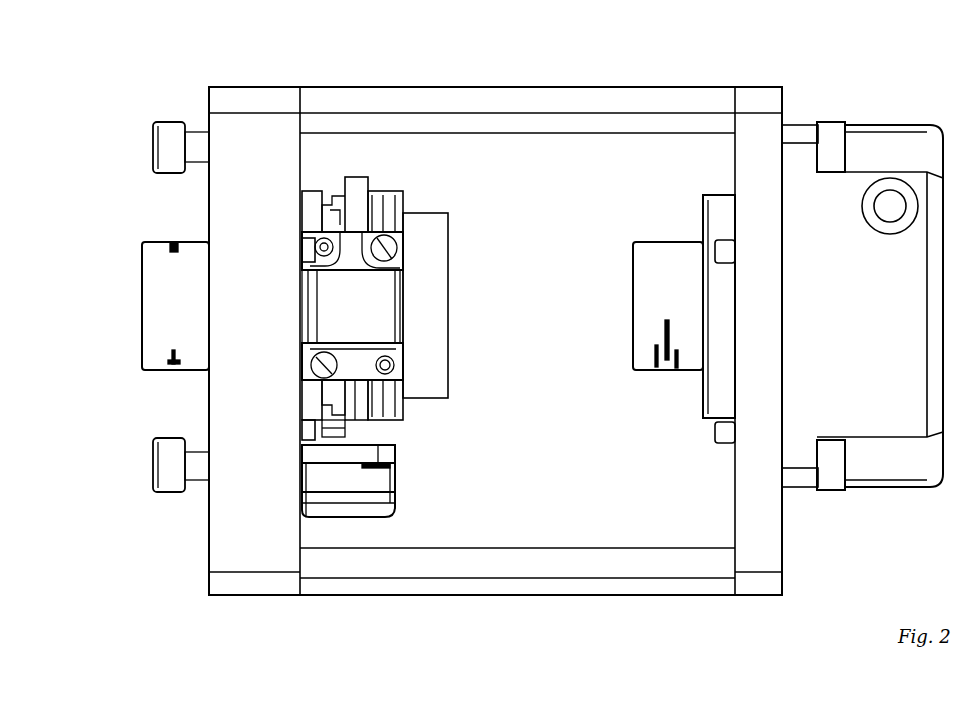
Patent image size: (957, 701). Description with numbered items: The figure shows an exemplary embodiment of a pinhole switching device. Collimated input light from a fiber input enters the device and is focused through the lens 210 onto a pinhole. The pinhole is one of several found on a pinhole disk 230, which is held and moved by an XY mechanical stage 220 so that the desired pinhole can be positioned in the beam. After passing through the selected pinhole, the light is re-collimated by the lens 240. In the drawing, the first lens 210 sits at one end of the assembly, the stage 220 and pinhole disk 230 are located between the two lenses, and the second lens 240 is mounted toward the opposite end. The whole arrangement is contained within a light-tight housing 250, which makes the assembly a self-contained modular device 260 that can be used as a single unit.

The lens 210 is at (148, 309).
The XY stage 220 is at (353, 536).
The pinhole disk 230 is at (395, 334).
The lens 240 is at (663, 315).
The light-tight housing 250 is at (482, 325).
The self-contained modular device 260 is at (862, 258).